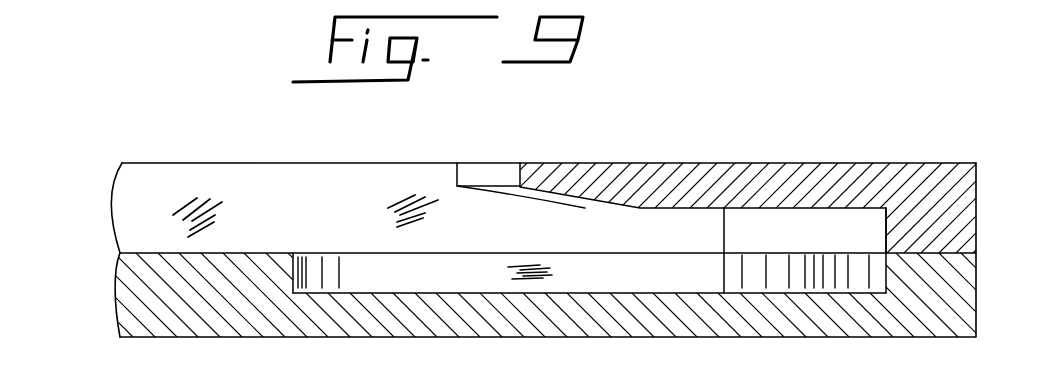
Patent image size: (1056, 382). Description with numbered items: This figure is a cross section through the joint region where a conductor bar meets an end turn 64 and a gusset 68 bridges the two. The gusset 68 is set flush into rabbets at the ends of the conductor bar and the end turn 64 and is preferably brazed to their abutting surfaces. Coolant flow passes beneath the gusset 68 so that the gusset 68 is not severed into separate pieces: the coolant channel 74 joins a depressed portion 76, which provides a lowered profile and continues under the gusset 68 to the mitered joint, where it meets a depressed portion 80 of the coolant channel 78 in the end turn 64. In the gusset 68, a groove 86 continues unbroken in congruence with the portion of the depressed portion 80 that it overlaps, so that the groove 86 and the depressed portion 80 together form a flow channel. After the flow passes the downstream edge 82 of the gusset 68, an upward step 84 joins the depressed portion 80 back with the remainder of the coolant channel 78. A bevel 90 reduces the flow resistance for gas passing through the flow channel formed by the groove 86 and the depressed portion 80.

The end turn 64 is at (957, 307).
The gusset 68 is at (803, 172).
The coolant channel 74 is at (867, 225).
The depressed portion 76 is at (855, 268).
The coolant channel 78 is at (263, 205).
The depressed portion 80 is at (590, 267).
The downstream edge 82 is at (494, 176).
The upward step 84 is at (312, 262).
The groove 86 is at (685, 227).
The bevel 90 is at (528, 194).